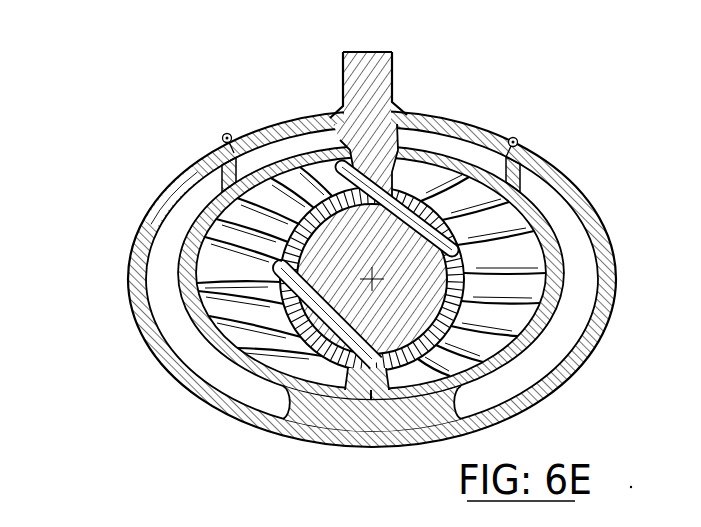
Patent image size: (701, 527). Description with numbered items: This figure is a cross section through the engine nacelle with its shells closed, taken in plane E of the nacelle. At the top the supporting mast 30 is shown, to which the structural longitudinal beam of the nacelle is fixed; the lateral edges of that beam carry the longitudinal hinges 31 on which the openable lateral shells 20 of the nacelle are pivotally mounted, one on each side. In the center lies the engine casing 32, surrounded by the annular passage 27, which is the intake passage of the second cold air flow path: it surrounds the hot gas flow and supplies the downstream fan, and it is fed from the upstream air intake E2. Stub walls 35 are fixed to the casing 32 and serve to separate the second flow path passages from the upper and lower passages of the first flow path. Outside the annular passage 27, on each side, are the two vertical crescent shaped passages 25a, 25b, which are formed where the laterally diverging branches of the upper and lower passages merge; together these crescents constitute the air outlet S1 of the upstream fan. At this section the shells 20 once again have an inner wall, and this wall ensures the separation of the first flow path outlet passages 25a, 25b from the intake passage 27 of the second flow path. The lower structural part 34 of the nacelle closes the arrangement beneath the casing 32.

The openable lateral shells 20 is at (165, 350).
The air outlet of the upstream fan S1 is at (163, 283).
The vertical crescent passage 25a is at (203, 198).
The vertical crescent passage 25b is at (559, 212).
The air intake E2 is at (218, 257).
The lower structural part of the nacelle 34 is at (281, 432).
The annular passage 27 is at (503, 393).
The supporting mast 30 is at (358, 73).
The engine casing 32 is at (473, 163).
The stub walls 35 is at (300, 157).
The longitudinal hinges 31 is at (222, 138).